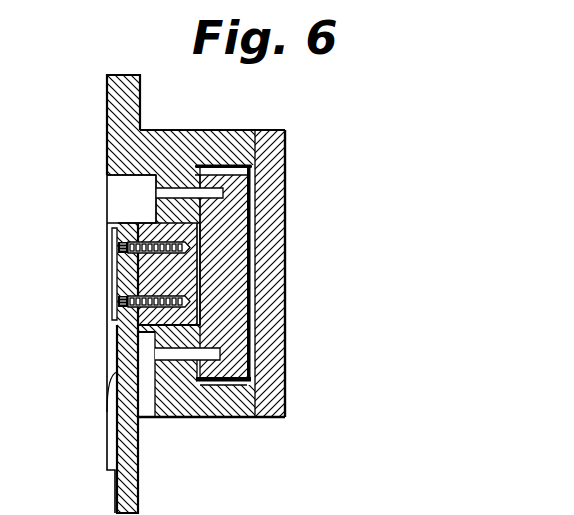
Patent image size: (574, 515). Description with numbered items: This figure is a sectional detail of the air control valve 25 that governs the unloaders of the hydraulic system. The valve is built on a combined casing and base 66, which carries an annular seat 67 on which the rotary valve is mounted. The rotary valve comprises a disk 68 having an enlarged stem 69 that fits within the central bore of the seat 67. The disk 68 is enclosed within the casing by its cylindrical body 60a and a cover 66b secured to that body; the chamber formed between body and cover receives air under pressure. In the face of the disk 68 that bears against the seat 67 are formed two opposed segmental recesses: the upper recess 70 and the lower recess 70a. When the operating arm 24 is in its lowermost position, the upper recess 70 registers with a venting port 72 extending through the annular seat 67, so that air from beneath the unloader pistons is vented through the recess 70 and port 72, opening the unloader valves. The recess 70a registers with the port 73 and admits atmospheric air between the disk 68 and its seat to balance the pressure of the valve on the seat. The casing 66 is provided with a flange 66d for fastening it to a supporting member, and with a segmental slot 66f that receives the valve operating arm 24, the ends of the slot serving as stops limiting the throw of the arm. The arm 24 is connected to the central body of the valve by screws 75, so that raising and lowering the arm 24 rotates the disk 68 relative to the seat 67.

The valve operating arm 24 is at (122, 488).
The air control valve 25 is at (120, 126).
The housing 60a is at (222, 143).
The combined casing and base 66 is at (152, 130).
The cover 66b is at (270, 216).
The flange 66d is at (95, 433).
The segmental slot 66f is at (125, 176).
The annular seat 67 is at (150, 333).
The valve disk 68 is at (235, 238).
The enlarged stem 69 is at (158, 271).
The upper segmental recess 70 is at (257, 157).
The segmental recess 70a is at (224, 350).
The venting port 72 is at (175, 193).
The port 73 is at (187, 352).
The screws 75 is at (126, 250).